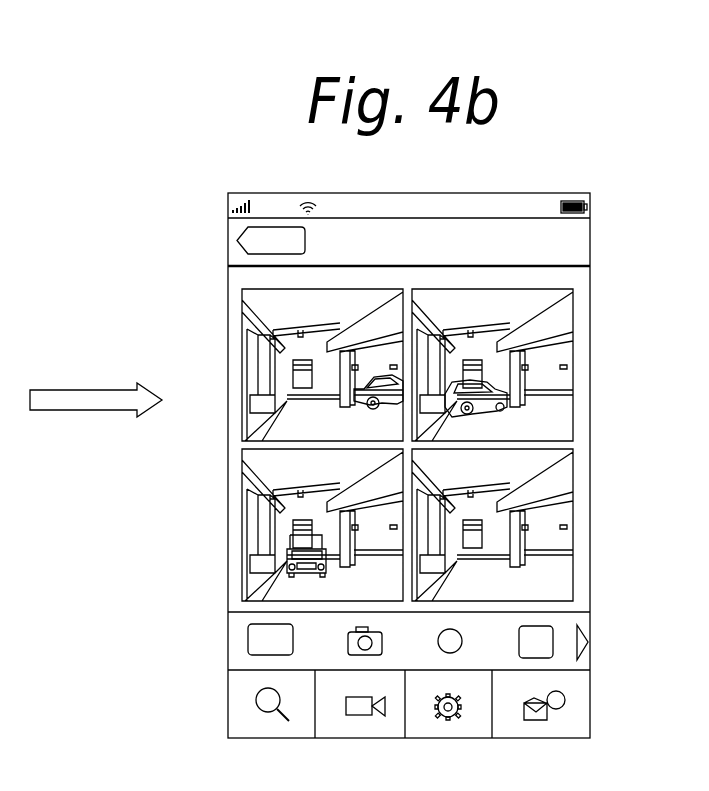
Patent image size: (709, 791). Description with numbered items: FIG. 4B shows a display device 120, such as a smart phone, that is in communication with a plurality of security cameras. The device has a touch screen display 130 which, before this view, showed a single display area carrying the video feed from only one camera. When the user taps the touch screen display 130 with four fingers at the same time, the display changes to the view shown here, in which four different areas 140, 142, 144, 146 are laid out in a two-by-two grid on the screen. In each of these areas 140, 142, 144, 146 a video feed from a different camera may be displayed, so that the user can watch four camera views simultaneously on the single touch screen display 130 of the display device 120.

The display device 120 is at (218, 663).
The touch screen display 130 is at (228, 313).
The first display area 140 is at (241, 375).
The second display area 142 is at (575, 350).
The third display area 144 is at (241, 532).
The fourth display area 146 is at (575, 530).